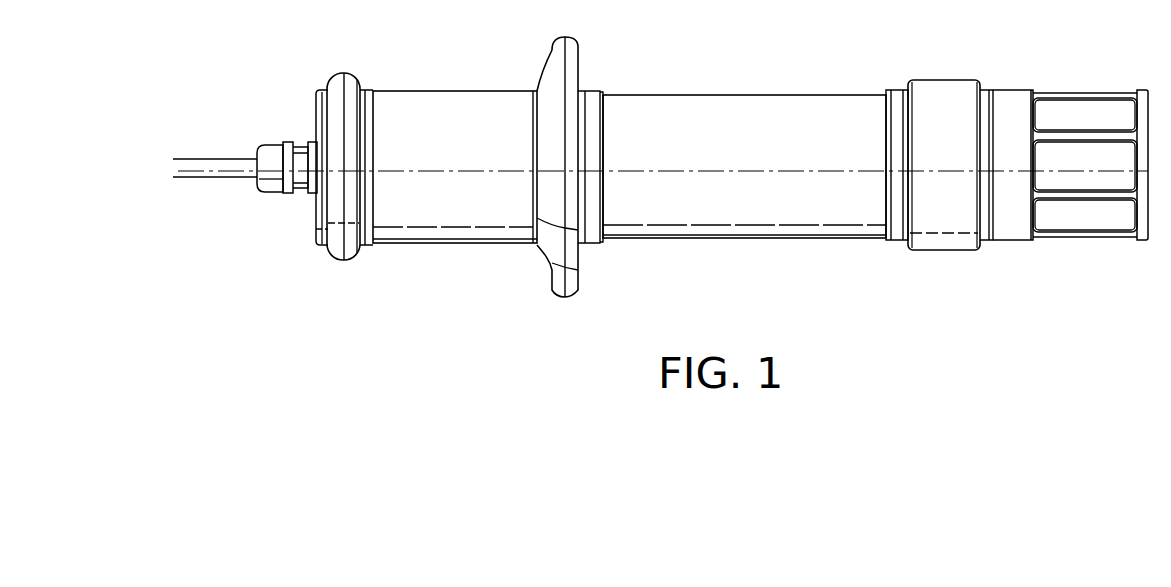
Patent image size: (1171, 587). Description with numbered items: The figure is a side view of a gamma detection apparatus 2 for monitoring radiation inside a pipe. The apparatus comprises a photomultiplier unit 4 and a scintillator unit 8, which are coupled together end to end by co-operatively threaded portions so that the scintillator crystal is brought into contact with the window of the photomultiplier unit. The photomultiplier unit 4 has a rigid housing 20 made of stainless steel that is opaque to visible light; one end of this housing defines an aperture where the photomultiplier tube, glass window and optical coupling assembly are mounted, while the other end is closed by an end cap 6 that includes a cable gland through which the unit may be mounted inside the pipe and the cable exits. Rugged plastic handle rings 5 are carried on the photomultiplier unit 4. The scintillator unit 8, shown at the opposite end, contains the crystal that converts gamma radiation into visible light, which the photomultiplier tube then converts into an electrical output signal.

The gamma detection apparatus 2 is at (660, 211).
The photomultiplier unit 4 is at (445, 110).
The handle rings 5 is at (352, 252).
The end cap 6 is at (276, 142).
The scintillator unit 8 is at (1082, 237).
The rigid housing 20 is at (762, 108).